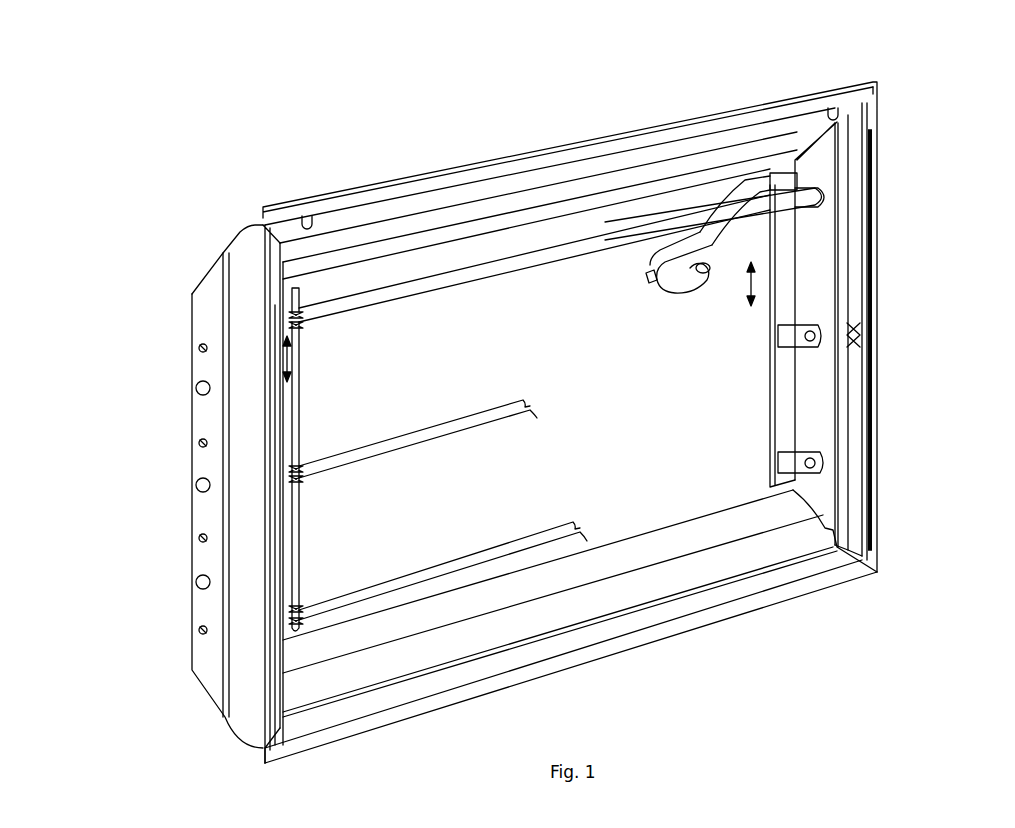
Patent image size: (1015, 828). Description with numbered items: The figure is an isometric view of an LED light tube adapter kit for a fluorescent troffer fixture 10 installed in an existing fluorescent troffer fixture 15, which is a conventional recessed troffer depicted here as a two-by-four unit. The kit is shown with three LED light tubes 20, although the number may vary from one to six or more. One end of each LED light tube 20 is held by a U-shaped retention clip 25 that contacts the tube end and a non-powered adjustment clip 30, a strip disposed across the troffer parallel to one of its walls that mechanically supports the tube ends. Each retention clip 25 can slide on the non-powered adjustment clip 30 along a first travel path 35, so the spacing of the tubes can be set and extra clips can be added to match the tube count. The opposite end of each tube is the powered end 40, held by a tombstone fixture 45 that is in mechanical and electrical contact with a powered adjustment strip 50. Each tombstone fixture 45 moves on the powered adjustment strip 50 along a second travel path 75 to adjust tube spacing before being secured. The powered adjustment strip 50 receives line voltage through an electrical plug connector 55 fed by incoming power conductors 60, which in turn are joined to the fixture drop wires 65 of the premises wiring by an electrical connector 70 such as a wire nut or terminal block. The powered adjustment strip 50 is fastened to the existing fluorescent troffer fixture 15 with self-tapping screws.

The LED light tube adapter kit for fluorescent troffer fixture 10 is at (121, 707).
The fluorescent troffer fixture 15 is at (205, 463).
The LED light tube 20 is at (476, 283).
The U-shaped retention clip 25 is at (302, 323).
The non-powered adjustment clip 30 is at (302, 527).
The first travel path t1 35 is at (283, 362).
The powered end 40 is at (815, 190).
The tombstone fixture 45 is at (822, 198).
The powered adjustment strip 50 is at (770, 410).
The electrical plug connector 55 is at (787, 180).
The incoming power conductor 60 is at (740, 187).
The fixture drop wire 65 is at (680, 290).
The electrical connector 70 is at (647, 278).
The second travel path t2 75 is at (736, 312).